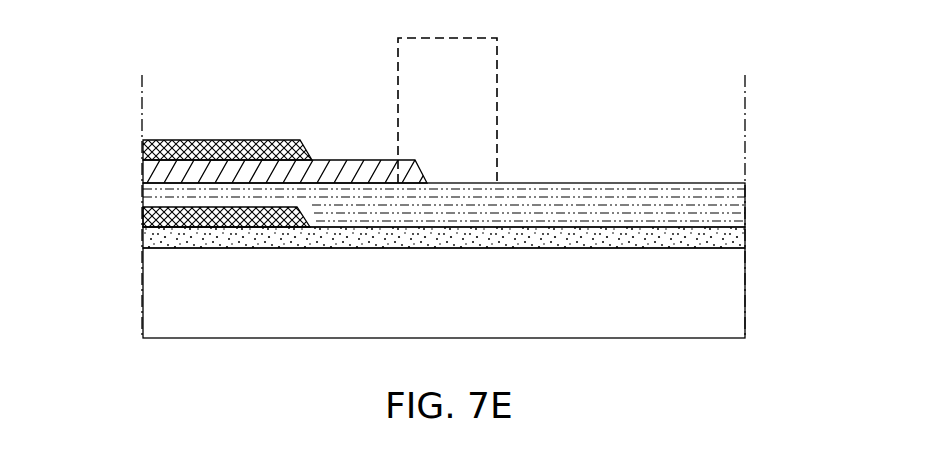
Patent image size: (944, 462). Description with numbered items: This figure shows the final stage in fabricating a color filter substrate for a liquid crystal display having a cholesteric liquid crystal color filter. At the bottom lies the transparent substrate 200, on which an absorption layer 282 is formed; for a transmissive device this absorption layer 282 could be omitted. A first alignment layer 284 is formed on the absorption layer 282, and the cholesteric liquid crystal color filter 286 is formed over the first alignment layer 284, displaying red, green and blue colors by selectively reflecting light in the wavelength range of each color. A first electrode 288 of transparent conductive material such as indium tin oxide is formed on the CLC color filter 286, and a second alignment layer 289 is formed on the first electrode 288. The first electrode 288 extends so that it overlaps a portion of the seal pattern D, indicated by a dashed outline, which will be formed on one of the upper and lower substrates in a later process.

The transparent substrate 200 is at (733, 298).
The absorption layer 282 is at (741, 240).
The first alignment layer 284 is at (222, 231).
The cholesteric liquid crystal color filter 286 is at (737, 210).
The first electrode 288 is at (157, 167).
The second alignment layer 289 is at (275, 139).
The seal pattern D is at (506, 60).